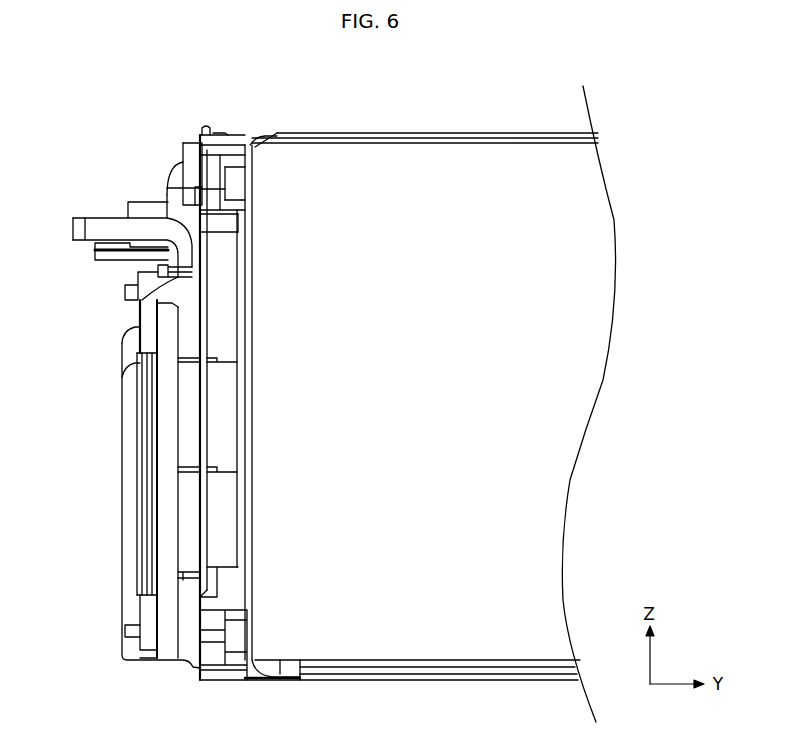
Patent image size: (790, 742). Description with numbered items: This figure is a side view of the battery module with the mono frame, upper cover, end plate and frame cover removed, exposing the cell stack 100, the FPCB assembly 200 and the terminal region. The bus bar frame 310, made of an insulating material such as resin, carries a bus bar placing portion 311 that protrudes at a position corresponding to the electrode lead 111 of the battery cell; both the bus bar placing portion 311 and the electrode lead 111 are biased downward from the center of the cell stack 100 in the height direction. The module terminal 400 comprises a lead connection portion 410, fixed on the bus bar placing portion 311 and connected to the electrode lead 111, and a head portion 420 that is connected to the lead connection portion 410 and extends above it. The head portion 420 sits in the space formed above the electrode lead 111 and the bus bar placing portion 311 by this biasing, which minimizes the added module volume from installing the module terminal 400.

The cell stack 100 is at (373, 625).
The FPCB assembly 200 is at (368, 132).
The electrode lead 111 is at (133, 473).
The bus bar frame 310 is at (222, 525).
The bus bar placing portion 311 is at (168, 575).
The module terminal 400 is at (68, 255).
The lead connection portion 410 is at (147, 612).
The head portion 420 is at (100, 217).